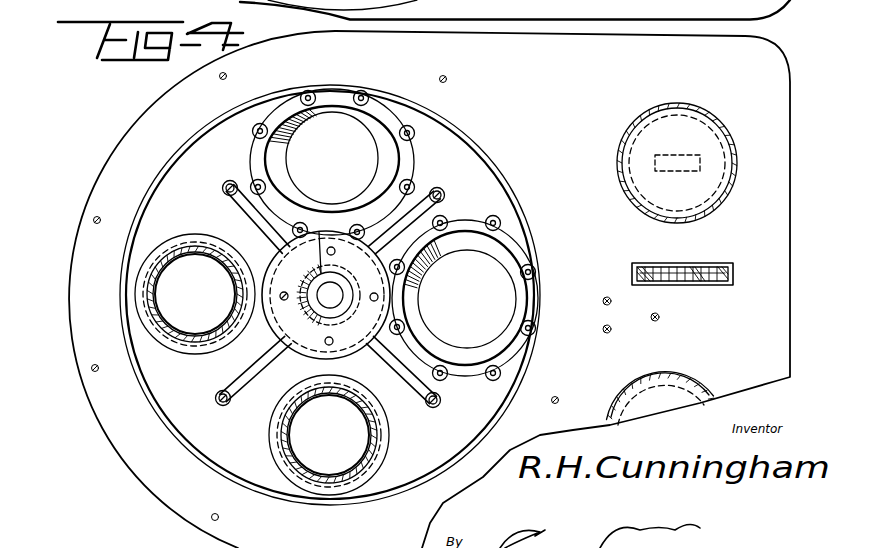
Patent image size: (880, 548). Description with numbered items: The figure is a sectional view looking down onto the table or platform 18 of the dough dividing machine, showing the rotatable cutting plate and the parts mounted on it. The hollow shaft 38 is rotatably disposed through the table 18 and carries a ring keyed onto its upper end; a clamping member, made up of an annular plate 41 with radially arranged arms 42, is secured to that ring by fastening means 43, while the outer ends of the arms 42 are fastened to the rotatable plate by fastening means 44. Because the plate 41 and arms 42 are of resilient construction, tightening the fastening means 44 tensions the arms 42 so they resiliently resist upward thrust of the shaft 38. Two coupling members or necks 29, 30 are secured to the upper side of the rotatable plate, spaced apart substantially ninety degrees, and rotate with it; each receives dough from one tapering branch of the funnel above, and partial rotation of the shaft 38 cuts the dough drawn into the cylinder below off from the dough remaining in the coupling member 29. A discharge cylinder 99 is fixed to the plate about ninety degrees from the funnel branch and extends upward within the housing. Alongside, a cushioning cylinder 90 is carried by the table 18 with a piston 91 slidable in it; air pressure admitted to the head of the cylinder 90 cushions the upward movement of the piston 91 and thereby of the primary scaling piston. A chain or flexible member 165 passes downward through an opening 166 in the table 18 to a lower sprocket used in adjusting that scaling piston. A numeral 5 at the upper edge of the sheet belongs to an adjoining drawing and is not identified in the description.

The upper figure element 5 is at (684, 0).
The table or platform 18 is at (780, 78).
The coupling member 29 is at (516, 250).
The coupling member 30 is at (409, 154).
The hollow shaft 38 is at (303, 283).
The annular body or plate 41 is at (313, 308).
The radial arms 42 is at (258, 372).
The fastening means 43 is at (326, 344).
The fastening means 44 is at (216, 399).
The cushioning cylinder 90 is at (637, 123).
The piston 91 is at (648, 403).
The discharge cylinder 99 is at (192, 341).
The chain or flexible member 165 is at (735, 273).
The opening 166 is at (699, 263).